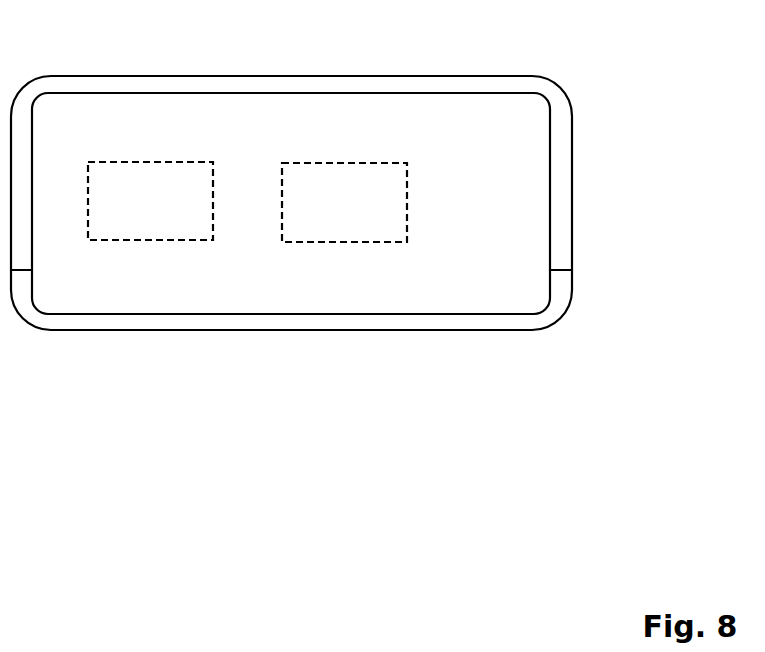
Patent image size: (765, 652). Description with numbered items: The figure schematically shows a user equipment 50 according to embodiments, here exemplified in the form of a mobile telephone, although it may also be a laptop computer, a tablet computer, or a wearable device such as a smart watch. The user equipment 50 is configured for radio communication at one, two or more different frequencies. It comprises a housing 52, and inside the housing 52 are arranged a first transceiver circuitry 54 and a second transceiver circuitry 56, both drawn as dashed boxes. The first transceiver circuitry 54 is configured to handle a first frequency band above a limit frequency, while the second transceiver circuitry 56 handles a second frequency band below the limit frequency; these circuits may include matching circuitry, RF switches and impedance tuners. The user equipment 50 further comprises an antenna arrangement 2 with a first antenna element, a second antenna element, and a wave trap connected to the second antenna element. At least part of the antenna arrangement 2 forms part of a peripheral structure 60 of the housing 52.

The user equipment 50 is at (598, 80).
The peripheral structure 60 is at (580, 154).
The housing 52 is at (557, 213).
The first transceiver circuitry 54 is at (160, 218).
The second transceiver circuitry 56 is at (354, 219).
The antenna arrangement 2 is at (368, 322).